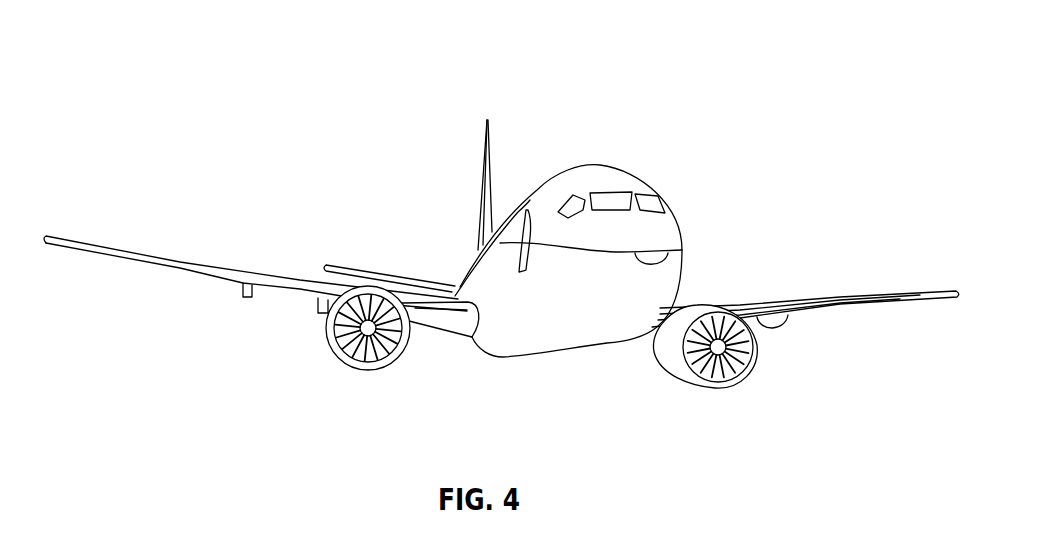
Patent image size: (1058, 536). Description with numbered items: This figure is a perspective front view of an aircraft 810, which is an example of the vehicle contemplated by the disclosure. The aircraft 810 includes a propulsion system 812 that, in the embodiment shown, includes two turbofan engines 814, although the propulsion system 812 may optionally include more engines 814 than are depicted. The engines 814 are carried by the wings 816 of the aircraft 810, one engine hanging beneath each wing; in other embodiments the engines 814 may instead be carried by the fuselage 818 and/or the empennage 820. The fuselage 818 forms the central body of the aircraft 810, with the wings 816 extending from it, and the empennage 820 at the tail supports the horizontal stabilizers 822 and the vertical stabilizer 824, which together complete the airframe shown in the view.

The aircraft 810 is at (278, 78).
The propulsion system 812 is at (790, 379).
The turbofan engines 814 is at (365, 372).
The wings 816 is at (167, 260).
The fuselage 818 is at (682, 222).
The empennage 820 is at (477, 250).
The horizontal stabilizers 822 is at (360, 265).
The vertical stabilizer 824 is at (483, 157).